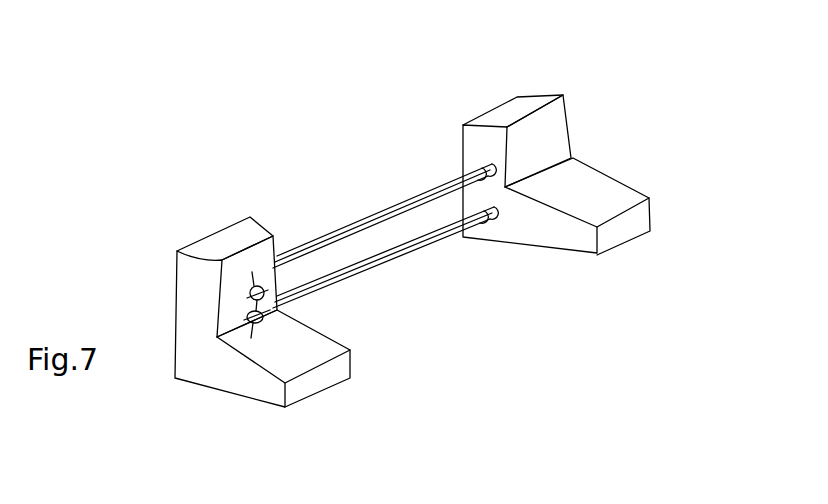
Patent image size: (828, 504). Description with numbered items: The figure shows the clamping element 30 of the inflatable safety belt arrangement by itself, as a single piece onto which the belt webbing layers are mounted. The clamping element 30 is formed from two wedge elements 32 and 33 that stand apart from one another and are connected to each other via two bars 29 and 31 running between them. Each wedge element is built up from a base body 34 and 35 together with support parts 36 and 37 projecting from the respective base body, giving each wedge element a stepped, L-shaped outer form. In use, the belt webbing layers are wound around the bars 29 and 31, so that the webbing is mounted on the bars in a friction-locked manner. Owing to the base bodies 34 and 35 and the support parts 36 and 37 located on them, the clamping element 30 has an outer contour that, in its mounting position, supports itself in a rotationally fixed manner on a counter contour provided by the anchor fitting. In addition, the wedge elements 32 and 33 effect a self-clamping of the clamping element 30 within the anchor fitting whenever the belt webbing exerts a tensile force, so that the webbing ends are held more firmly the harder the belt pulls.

The bar 29 is at (443, 190).
The clamping element 30 is at (268, 177).
The bar 31 is at (485, 150).
The wedge element 32 is at (190, 285).
The wedge element 33 is at (560, 135).
The base body 34 is at (513, 107).
The base body 35 is at (210, 243).
The support part 36 is at (607, 191).
The support part 37 is at (242, 380).